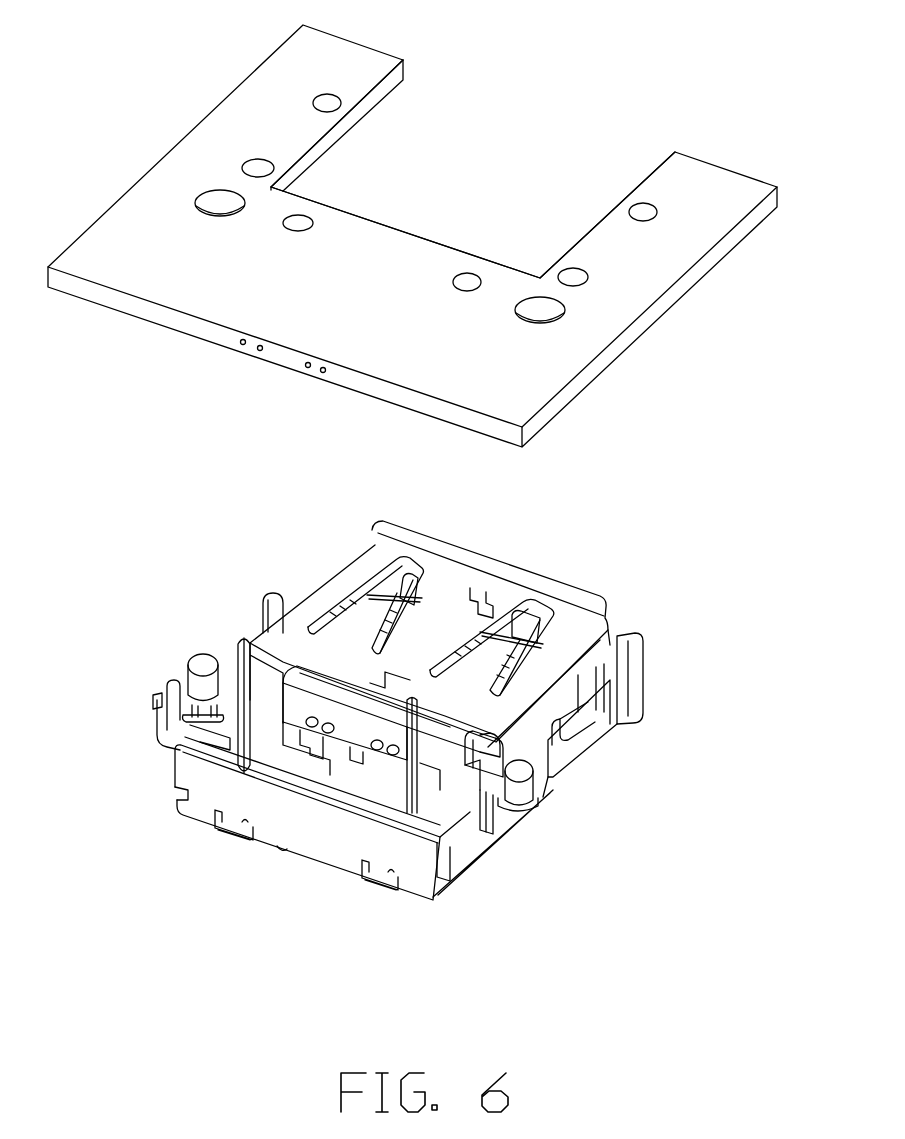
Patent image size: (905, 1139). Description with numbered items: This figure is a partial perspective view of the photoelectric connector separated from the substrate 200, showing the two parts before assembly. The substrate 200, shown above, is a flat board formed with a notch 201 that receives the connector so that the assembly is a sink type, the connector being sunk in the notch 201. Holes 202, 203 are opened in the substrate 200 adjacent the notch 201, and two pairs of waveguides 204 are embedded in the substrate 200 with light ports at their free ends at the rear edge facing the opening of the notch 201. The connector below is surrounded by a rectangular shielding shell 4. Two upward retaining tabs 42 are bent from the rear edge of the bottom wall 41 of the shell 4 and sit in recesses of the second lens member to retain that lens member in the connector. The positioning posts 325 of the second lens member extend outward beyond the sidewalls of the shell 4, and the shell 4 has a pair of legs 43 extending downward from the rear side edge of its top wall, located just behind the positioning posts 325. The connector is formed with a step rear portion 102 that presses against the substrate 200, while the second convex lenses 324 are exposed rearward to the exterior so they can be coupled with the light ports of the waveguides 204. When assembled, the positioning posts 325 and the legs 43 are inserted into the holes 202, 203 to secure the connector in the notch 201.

The substrate 200 is at (685, 187).
The notch 201 is at (483, 150).
The hole 202 is at (573, 277).
The hole 203 is at (540, 310).
The waveguides 204 is at (260, 348).
The shielding shell 4 is at (573, 622).
The bottom wall 41 is at (472, 582).
The retaining tabs 42 is at (273, 700).
The legs 43 is at (488, 807).
The step rear portion 102 is at (378, 840).
The second convex lenses 324 is at (378, 745).
The positioning posts 325 is at (518, 787).